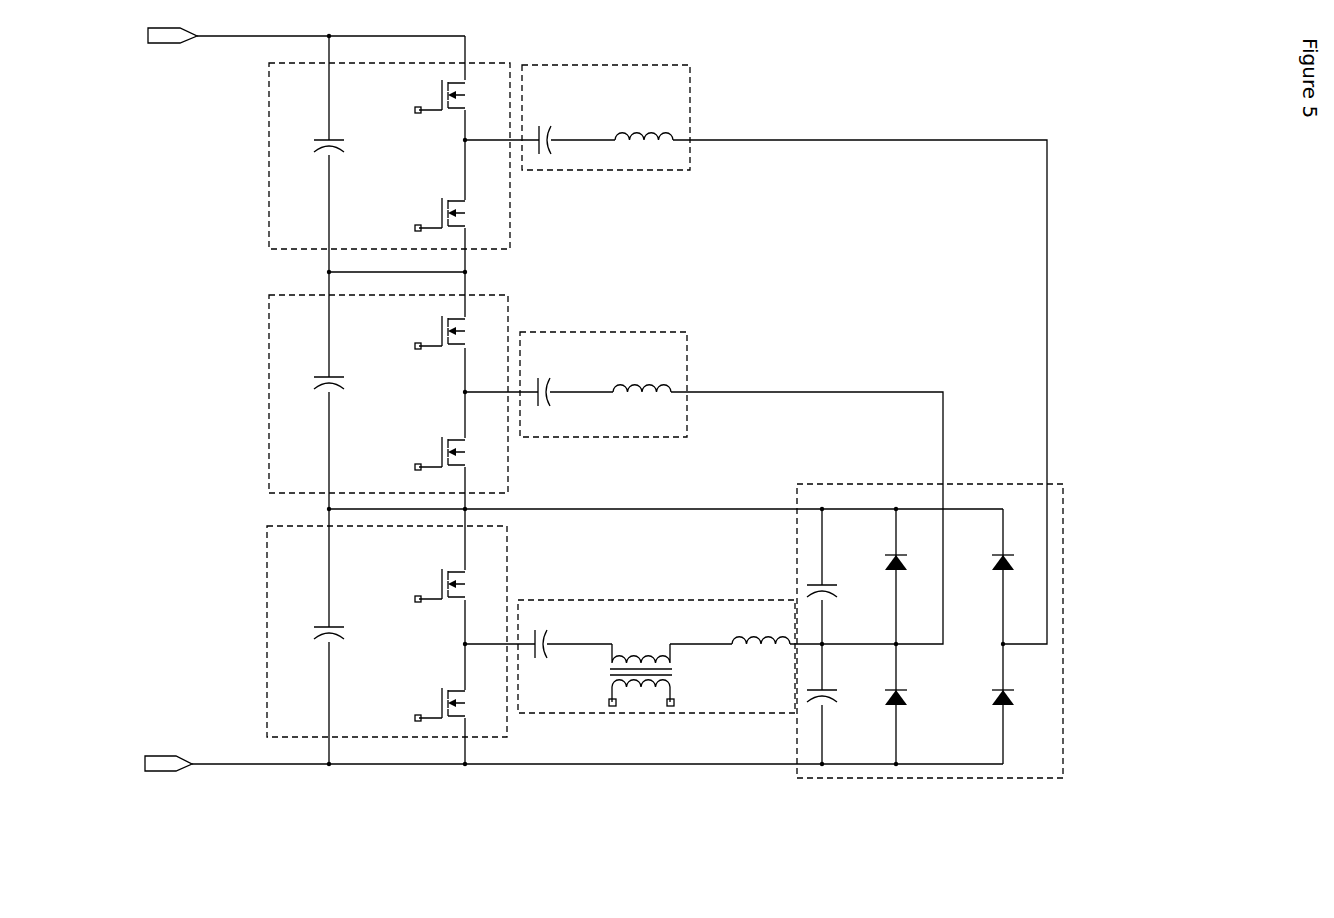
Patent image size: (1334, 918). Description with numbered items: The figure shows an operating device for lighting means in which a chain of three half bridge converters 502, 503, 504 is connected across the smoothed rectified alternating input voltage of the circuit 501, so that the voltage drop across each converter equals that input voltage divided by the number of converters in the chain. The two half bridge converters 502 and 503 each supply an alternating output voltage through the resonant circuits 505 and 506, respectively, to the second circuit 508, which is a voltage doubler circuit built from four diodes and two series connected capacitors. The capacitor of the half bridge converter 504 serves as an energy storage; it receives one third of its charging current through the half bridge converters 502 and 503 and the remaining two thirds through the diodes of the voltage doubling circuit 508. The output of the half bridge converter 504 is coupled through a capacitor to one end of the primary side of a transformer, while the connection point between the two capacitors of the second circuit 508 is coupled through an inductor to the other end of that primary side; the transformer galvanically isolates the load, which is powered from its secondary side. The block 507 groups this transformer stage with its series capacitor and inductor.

The circuit 501 is at (546, 418).
The half bridge converter 502 is at (362, 176).
The half bridge converter 503 is at (361, 421).
The half bridge converter 504 is at (349, 636).
The resonant circuit 505 is at (756, 354).
The resonant circuit 506 is at (704, 488).
The third resonant tank with transformer 507 is at (643, 642).
The second circuit 508 is at (957, 631).